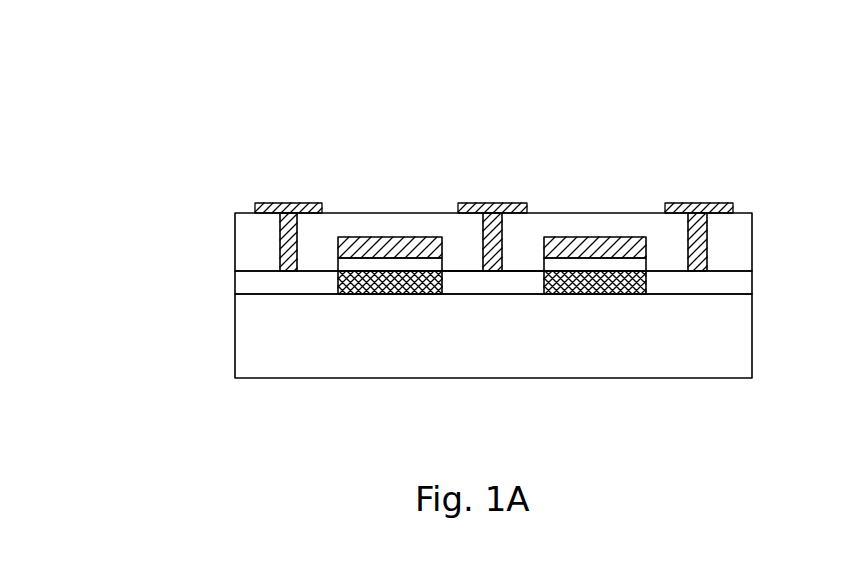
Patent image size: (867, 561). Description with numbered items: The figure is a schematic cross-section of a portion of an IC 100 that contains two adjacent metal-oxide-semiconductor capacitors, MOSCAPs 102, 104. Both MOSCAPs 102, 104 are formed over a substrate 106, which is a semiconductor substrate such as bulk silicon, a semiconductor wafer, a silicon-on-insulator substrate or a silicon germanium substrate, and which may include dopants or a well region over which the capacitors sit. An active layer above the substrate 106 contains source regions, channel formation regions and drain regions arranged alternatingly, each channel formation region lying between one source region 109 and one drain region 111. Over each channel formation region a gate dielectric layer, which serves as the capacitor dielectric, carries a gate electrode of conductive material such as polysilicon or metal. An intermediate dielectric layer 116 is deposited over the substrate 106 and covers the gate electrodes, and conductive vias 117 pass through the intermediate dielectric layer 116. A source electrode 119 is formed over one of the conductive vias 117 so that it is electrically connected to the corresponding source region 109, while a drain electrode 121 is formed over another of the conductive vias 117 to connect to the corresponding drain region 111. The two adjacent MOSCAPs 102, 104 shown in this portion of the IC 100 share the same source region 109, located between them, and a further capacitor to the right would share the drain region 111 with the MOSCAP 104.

The IC 100 is at (170, 127).
The MOSCAP 102 is at (370, 158).
The MOSCAP 104 is at (585, 157).
The substrate 106 is at (265, 345).
The source region 109 is at (495, 288).
The drain region 111 is at (263, 287).
The intermediate dielectric layer 116 is at (722, 235).
The conductive via 117 is at (283, 233).
The source electrode 119 is at (487, 230).
The drain electrode 121 is at (702, 208).